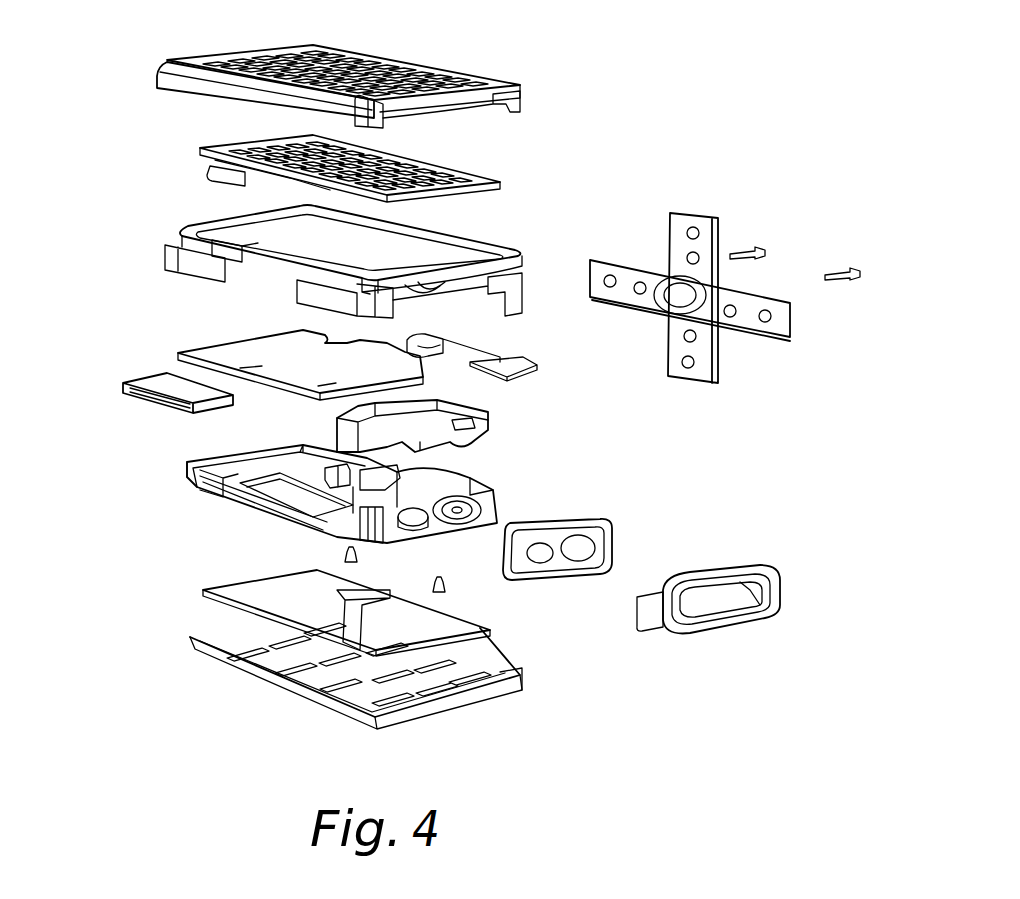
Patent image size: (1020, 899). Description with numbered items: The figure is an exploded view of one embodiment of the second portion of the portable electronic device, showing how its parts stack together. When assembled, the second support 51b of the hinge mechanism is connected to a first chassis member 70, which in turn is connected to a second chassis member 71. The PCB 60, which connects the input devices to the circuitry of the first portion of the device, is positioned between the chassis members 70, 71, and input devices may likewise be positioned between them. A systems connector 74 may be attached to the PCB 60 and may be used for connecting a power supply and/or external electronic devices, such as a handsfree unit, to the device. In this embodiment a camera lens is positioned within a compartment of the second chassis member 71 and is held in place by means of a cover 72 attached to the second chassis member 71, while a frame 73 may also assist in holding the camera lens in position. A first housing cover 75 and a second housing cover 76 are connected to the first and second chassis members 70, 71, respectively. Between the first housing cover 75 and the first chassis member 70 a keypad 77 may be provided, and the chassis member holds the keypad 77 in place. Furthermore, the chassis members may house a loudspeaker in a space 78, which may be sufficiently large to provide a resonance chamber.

The first housing cover 75 is at (167, 65).
The keypad 77 is at (197, 153).
The first chassis member 70 is at (173, 232).
The PCB 60 is at (227, 337).
The systems connector 74 is at (153, 372).
The cover 72 is at (490, 413).
The space 78 is at (283, 473).
The second chassis member 71 is at (187, 473).
The second housing cover 76 is at (190, 638).
The frame 73 is at (780, 590).
The second support 51b is at (773, 342).